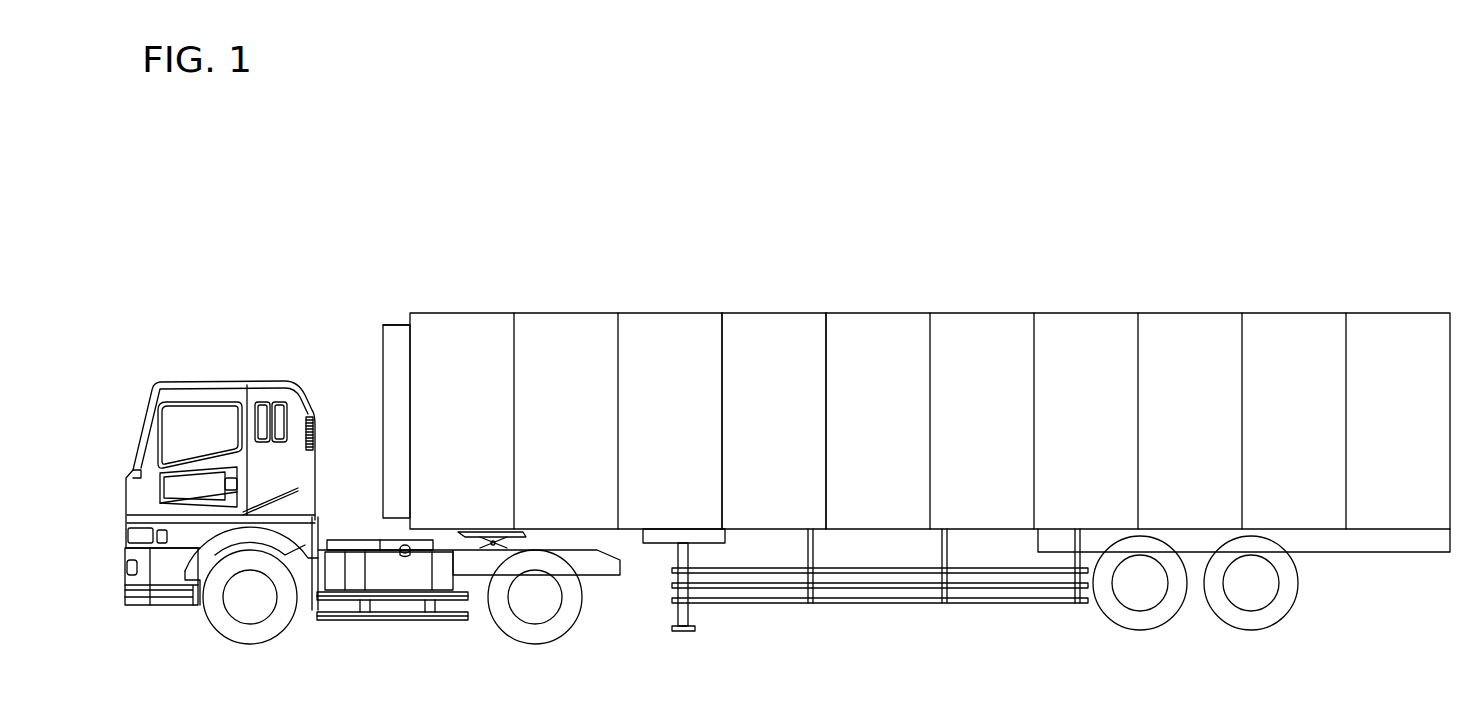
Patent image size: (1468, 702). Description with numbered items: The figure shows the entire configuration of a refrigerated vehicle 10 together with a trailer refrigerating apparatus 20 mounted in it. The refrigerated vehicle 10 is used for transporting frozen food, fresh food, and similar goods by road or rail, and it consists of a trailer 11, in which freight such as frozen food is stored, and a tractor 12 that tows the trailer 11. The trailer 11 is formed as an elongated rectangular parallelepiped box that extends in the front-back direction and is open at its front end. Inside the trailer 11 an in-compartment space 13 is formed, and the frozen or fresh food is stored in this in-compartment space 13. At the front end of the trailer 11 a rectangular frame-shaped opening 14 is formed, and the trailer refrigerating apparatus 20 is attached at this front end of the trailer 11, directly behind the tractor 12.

The refrigerated vehicle 10 is at (271, 228).
The trailer 11 is at (870, 313).
The tractor 12 is at (216, 380).
The in-compartment space 13 is at (768, 355).
The opening 14 is at (405, 348).
The trailer refrigerating apparatus 20 is at (381, 343).